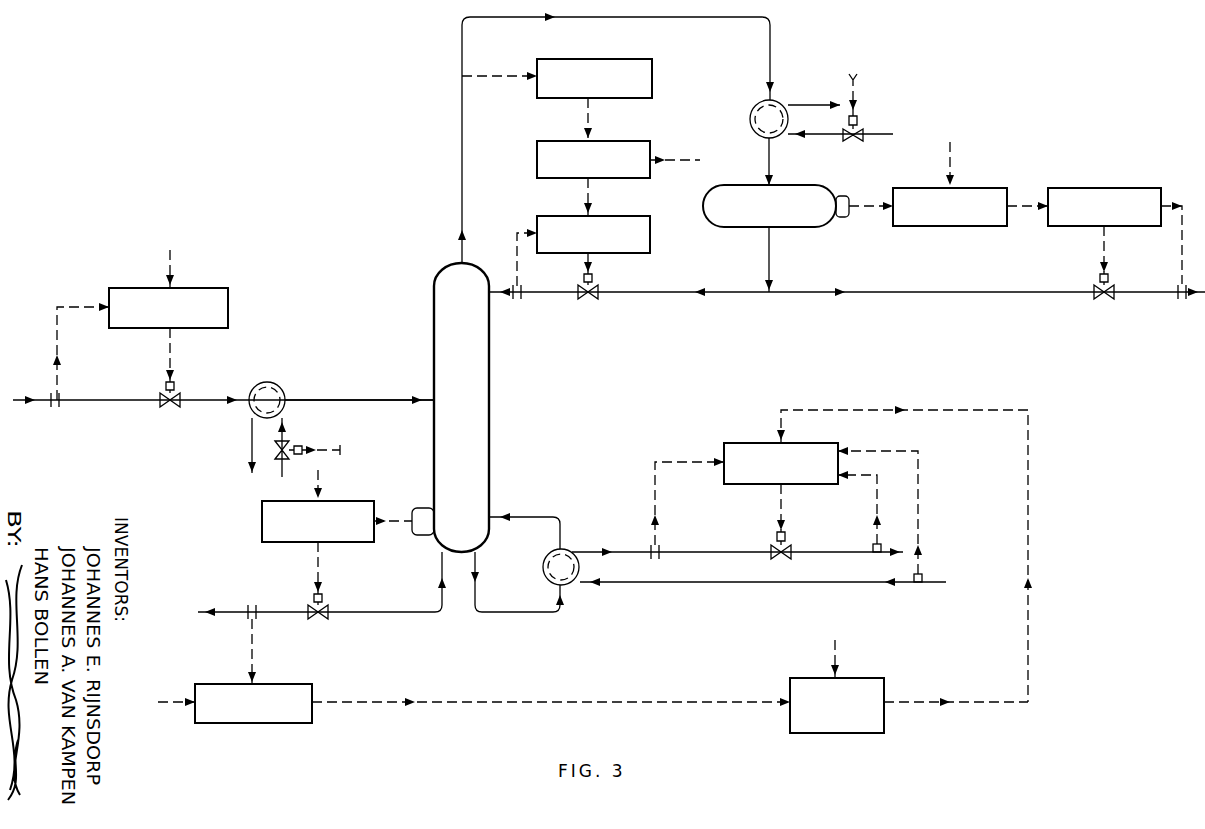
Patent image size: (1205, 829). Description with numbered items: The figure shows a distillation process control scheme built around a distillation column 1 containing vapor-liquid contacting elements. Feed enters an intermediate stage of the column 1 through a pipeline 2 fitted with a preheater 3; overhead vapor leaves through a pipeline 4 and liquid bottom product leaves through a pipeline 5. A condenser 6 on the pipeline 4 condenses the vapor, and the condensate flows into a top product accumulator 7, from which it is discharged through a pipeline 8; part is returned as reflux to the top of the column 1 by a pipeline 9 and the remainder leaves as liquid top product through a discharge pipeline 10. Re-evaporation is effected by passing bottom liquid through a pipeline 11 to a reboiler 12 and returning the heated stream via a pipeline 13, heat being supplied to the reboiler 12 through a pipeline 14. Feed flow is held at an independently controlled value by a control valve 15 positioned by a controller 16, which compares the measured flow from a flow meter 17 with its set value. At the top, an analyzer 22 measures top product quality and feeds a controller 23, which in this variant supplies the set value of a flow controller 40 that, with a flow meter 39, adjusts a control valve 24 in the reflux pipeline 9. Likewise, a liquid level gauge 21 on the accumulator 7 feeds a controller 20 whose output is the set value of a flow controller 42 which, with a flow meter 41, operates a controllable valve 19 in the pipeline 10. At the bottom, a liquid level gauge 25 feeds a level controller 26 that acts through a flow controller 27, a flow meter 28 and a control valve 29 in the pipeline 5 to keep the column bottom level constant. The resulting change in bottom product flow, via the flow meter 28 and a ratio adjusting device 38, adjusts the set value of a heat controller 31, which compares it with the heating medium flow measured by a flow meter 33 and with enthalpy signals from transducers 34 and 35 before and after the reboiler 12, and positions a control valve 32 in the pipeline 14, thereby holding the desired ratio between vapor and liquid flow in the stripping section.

The distillation column 1 is at (455, 410).
The feed pipeline 2 is at (350, 399).
The preheater 3 is at (281, 389).
The top product discharge pipeline 4 is at (772, 56).
The bottom product pipeline 5 is at (420, 610).
The condenser 6 is at (751, 112).
The top product accumulator 7 is at (795, 185).
The accumulator discharge pipeline 8 is at (769, 272).
The reflux pipeline 9 is at (718, 290).
The discharge pipeline 10 is at (808, 294).
The bottom liquid pipeline 11 is at (500, 611).
The reboiler 12 is at (547, 556).
The return pipeline 13 is at (530, 516).
The heating medium pipeline 14 is at (720, 551).
The control valve 15 is at (172, 408).
The controller 16 is at (196, 288).
The flow meter 17 is at (63, 392).
The controllable valve 19 is at (1102, 300).
The controller 20 is at (968, 188).
The liquid level gauge 21 is at (851, 218).
The analyzer 22 is at (608, 58).
The controller 23 is at (612, 140).
The control valve 24 is at (592, 300).
The liquid level gauge 25 is at (414, 536).
The level controller 26 is at (338, 500).
The flow controller 27 is at (275, 684).
The flow meter 28 is at (247, 620).
The control valve 29 is at (320, 620).
The heat controller 31 is at (815, 442).
The control valve 32 is at (793, 552).
The flow meter 33 is at (649, 546).
The transducer 34 is at (923, 575).
The transducer 35 is at (882, 546).
The ratio adjusting device 38 is at (855, 678).
The flow meter 39 is at (521, 300).
The flow controller 40 is at (612, 215).
The flow meter 41 is at (1110, 188).
The flow controller 42 is at (1188, 285).